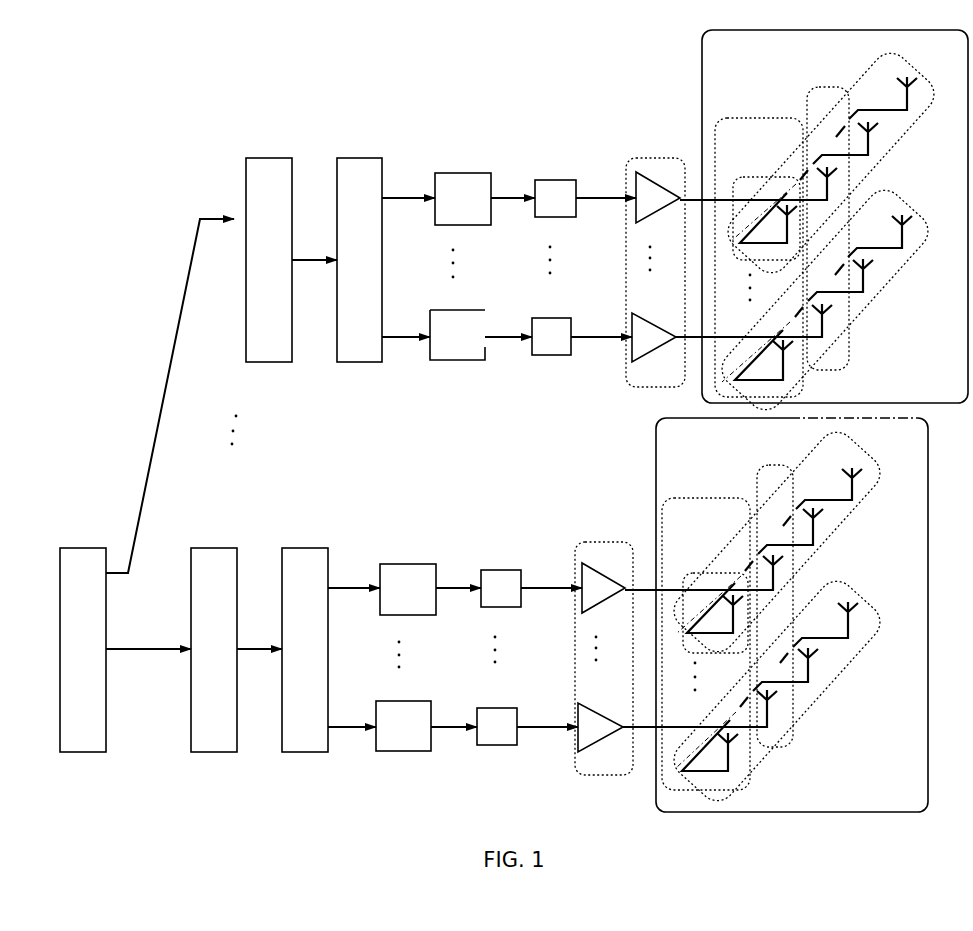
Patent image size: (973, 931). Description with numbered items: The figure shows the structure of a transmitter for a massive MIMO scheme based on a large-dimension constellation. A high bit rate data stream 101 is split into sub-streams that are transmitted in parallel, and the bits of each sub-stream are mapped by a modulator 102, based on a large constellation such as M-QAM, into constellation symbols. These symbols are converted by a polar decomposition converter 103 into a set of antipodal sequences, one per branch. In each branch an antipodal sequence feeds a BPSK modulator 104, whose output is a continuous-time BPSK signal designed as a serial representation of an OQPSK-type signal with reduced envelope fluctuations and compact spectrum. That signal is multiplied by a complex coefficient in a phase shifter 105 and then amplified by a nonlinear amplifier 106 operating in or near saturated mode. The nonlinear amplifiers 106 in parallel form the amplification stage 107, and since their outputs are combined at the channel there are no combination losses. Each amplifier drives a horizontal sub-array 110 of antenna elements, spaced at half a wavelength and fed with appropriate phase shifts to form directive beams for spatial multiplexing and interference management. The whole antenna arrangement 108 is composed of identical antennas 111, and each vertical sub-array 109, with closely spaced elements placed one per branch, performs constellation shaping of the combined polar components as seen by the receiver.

The high bit rate data stream 101 is at (80, 547).
The modulator 102 is at (264, 155).
The polar decomposition converter 103 is at (360, 155).
The BPSK modulator 104 is at (461, 170).
The phase shifter 105 is at (558, 178).
The nonlinear amplifier 106 is at (645, 172).
The amplification stage 107 is at (675, 155).
The antenna arrangement 108 is at (700, 80).
The vertical antenna sub-array 109 is at (760, 117).
The horizontal antenna sub-array 110 is at (920, 64).
The antenna 111 is at (747, 176).